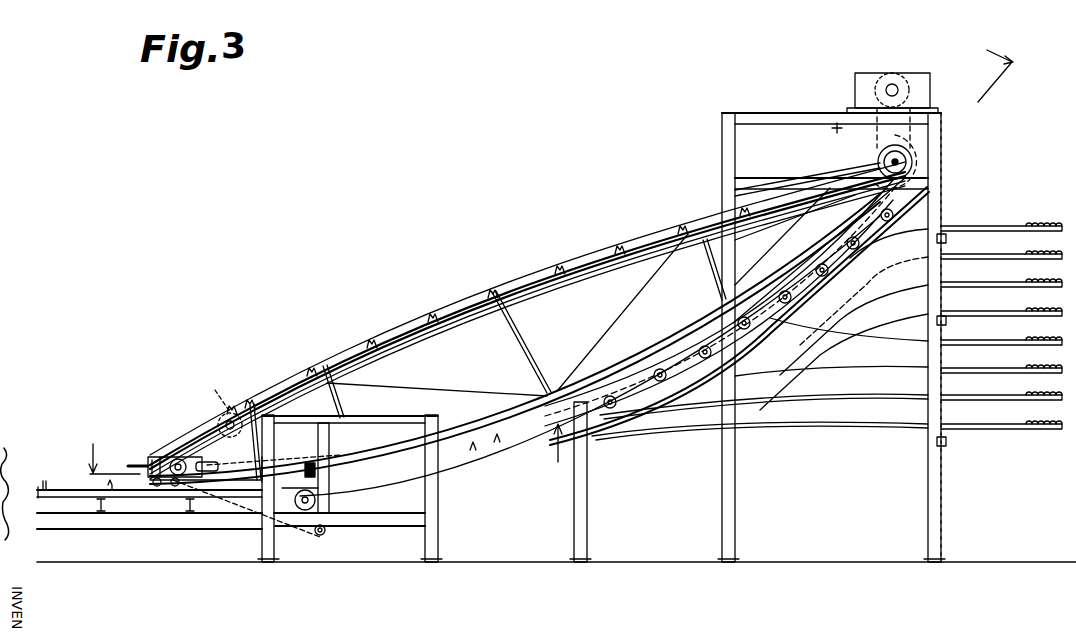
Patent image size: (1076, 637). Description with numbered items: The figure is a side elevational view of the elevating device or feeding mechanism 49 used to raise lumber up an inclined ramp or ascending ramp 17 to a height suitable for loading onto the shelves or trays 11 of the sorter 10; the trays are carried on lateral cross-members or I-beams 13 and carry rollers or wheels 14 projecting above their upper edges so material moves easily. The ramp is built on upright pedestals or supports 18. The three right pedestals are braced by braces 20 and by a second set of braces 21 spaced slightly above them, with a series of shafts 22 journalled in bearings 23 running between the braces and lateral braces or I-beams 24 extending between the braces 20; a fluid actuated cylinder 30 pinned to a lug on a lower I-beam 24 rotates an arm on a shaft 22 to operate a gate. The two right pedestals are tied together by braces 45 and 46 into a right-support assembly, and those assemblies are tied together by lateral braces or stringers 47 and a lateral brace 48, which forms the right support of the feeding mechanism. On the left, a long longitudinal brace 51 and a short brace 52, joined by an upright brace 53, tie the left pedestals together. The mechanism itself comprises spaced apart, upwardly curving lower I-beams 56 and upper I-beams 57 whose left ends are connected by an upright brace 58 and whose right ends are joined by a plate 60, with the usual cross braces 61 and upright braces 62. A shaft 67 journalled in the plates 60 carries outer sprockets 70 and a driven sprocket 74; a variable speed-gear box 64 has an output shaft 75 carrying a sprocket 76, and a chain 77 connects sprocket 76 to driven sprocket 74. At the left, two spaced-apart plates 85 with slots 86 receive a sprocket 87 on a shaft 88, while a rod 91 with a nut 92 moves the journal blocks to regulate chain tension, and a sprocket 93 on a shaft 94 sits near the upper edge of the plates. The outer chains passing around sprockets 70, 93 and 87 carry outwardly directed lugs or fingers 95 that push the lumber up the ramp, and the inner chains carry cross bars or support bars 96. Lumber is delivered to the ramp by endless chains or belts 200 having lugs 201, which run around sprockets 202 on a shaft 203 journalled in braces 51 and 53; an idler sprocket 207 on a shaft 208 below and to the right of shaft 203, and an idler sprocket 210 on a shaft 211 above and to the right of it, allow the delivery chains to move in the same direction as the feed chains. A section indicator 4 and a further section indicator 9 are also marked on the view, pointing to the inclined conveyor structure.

The section line 4 is at (550, 252).
The inclined elevating conveyor 9 is at (527, 320).
The sorter 10 is at (950, 136).
The shelves or trays 11 is at (964, 228).
The lateral cross-members or I-beams 13 is at (947, 240).
The rollers or wheels 14 is at (1043, 222).
The inclined ramp or ascending ramp 17 is at (552, 450).
The upright pedestals or supports 18 is at (264, 548).
The braces 20 is at (627, 432).
The second set of braces 21 is at (612, 396).
The shafts 22 is at (659, 371).
The bearings 23 is at (662, 370).
The lateral braces or I-beams 24 is at (895, 273).
The fluid actuated cylinder 30 is at (602, 441).
The braces 45 is at (749, 179).
The braces 46 is at (758, 114).
The lateral braces or stringers 47 is at (832, 129).
The lateral brace 48 is at (844, 198).
The feeding mechanism 49 is at (482, 334).
The long longitudinal brace 51 is at (106, 529).
The short brace 52 is at (398, 420).
The upright brace 53 is at (331, 508).
The lower I-beams 56 is at (462, 427).
The upper I-beams 57 is at (411, 331).
The upright brace 58 is at (256, 446).
The plate 60 is at (863, 163).
The cross braces 61 is at (469, 389).
The upright braces 62 is at (339, 410).
The variable speed-gear box 64 is at (931, 75).
The shaft 67 is at (896, 148).
The outer sprockets 70 is at (878, 144).
The driven sprocket 74 is at (922, 153).
The output shaft 75 is at (897, 84).
The sprocket 76 is at (885, 72).
The chain 77 is at (922, 98).
The plates 85 is at (200, 456).
The slots 86 is at (210, 461).
The sprocket 87 is at (174, 458).
The shaft 88 is at (163, 488).
The rod 91 is at (130, 466).
The nut 92 is at (152, 458).
The sprocket 93 is at (212, 392).
The shaft 94 is at (233, 405).
The lugs or fingers 95 is at (496, 298).
The cross bars or support bars 96 is at (505, 293).
The endless chains or belts 200 is at (56, 489).
The lugs 201 is at (45, 481).
The sprockets 202 is at (334, 489).
The shaft 203 is at (311, 509).
The idler sprocket 207 is at (322, 537).
The shaft 208 is at (327, 531).
The idler sprocket 210 is at (298, 454).
The shaft 211 is at (313, 461).